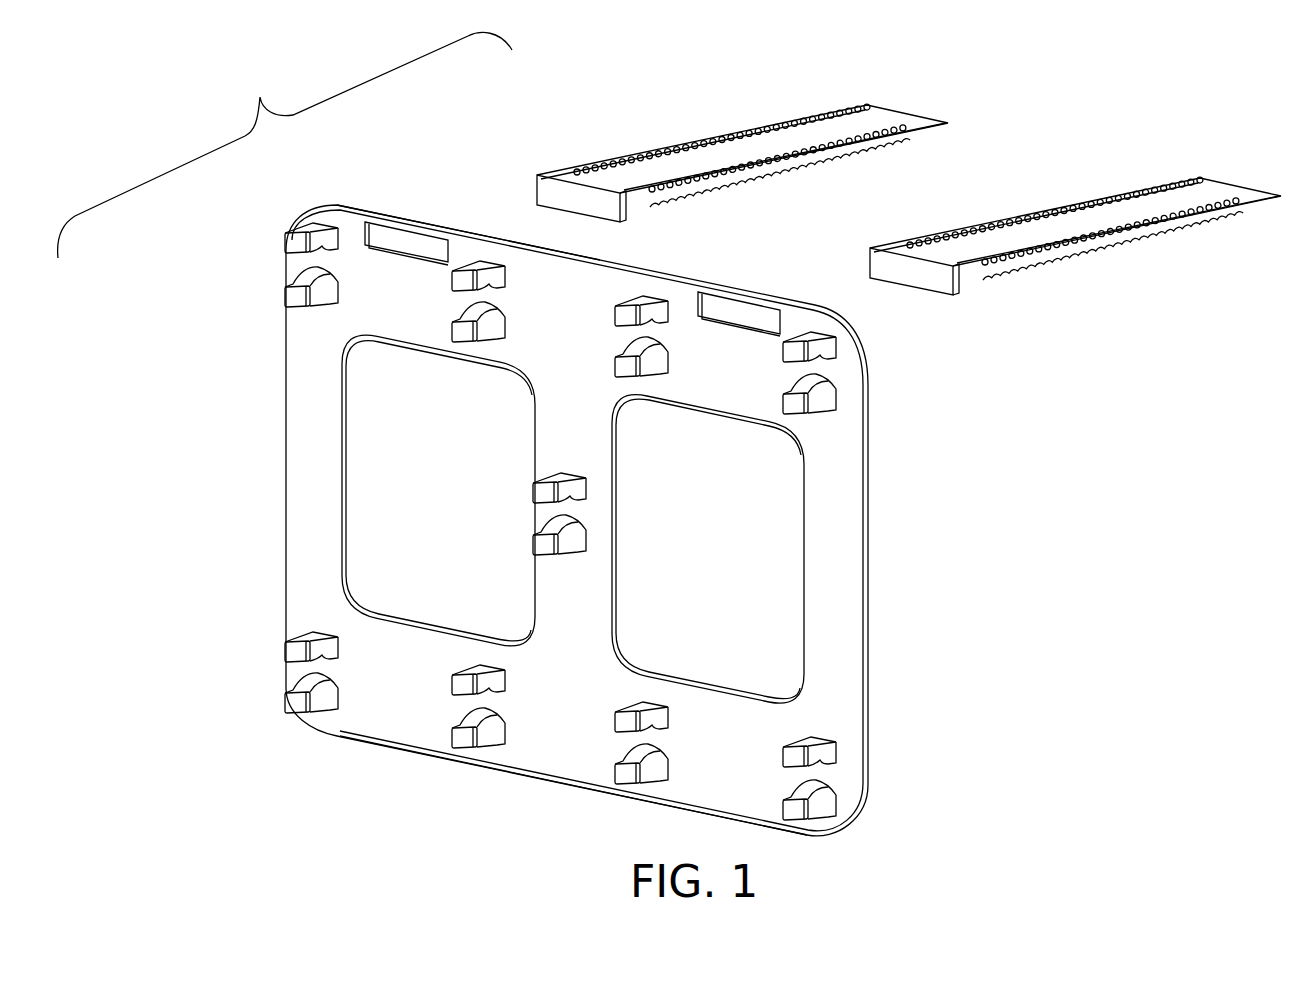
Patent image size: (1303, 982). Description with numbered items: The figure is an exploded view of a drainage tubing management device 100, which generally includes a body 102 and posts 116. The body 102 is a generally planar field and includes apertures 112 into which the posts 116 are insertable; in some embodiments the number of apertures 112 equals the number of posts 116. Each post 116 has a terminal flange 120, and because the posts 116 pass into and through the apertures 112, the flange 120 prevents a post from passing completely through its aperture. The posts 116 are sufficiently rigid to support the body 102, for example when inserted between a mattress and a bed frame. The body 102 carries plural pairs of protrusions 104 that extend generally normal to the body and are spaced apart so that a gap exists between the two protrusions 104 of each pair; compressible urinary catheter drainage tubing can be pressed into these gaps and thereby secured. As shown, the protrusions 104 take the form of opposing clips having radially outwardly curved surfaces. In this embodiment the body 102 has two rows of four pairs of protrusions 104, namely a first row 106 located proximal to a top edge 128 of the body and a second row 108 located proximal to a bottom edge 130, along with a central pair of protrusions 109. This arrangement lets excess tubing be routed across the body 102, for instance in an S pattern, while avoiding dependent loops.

The drainage tubing management device 100 is at (148, 96).
The body 102 is at (838, 572).
The protrusions 104 is at (838, 358).
The first row 106 is at (262, 262).
The second row 108 is at (262, 672).
The central pair of protrusions 109 is at (488, 513).
The apertures 112 is at (421, 242).
The posts 116 is at (718, 140).
The terminal flange 120 is at (537, 186).
The top edge 128 is at (342, 205).
The bottom edge 130 is at (562, 787).